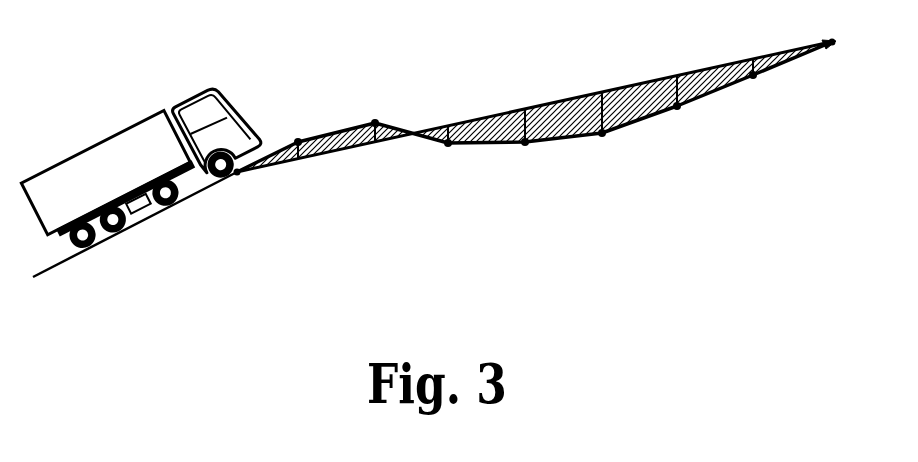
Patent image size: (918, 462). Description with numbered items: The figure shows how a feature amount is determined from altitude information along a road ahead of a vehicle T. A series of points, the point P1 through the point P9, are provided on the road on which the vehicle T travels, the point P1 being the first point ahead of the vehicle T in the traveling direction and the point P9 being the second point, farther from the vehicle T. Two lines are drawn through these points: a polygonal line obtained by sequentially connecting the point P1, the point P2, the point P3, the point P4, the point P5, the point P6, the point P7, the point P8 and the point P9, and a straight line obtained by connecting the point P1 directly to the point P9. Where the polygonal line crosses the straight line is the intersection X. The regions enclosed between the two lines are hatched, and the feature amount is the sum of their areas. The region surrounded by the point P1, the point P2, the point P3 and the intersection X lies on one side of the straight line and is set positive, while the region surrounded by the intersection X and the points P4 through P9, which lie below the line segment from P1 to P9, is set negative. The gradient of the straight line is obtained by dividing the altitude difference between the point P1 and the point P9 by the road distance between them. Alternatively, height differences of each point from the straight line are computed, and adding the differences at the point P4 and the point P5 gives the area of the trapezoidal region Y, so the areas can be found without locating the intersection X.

The vehicle T is at (212, 94).
The point P1 is at (231, 196).
The point P2 is at (298, 130).
The point P3 is at (373, 113).
The point P4 is at (452, 156).
The point P5 is at (527, 147).
The point P6 is at (605, 134).
The point P7 is at (680, 112).
The point P8 is at (757, 91).
The point P9 is at (832, 63).
The intersection X is at (415, 131).
The trapezoidal region Y is at (495, 130).